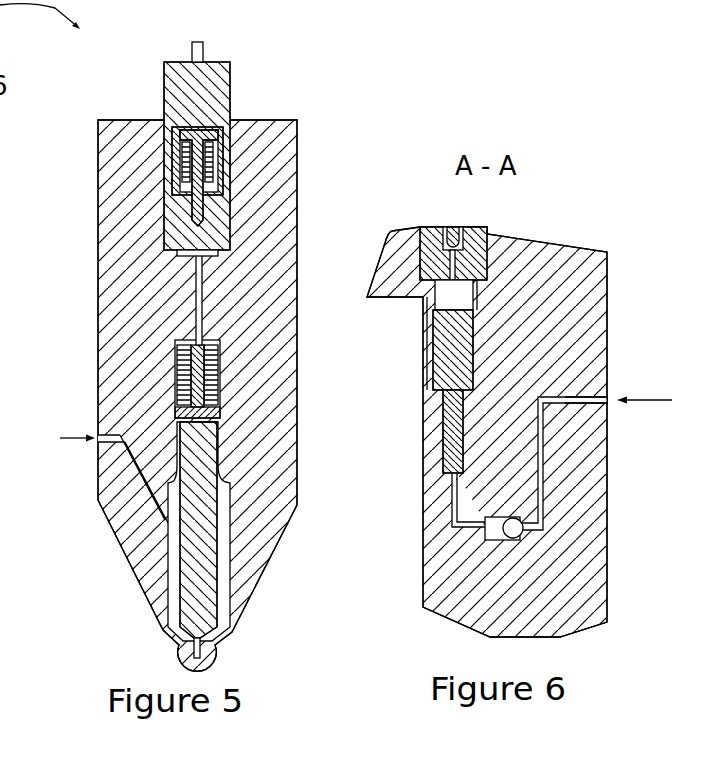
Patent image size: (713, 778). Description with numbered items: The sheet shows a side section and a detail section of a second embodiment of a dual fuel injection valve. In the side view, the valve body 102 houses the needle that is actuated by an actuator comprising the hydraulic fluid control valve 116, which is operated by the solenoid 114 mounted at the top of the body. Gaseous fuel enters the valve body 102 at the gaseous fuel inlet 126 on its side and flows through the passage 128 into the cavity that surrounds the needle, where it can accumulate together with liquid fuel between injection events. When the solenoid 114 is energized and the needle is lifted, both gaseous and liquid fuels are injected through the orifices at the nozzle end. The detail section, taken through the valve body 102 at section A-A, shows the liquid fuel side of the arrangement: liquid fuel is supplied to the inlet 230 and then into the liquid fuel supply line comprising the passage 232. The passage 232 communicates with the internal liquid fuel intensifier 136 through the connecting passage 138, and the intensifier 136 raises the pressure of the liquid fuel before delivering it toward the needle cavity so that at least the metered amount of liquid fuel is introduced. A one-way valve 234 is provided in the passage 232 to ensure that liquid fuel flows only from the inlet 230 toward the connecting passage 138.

In FIG. 5, the valve body 102 is at (263, 140).
In FIG. 6, the valve body 102 is at (543, 273).
In FIG. 5, the solenoid 114 is at (200, 92).
In FIG. 5, the hydraulic fluid control valve 116 is at (220, 128).
In FIG. 5, the gaseous fuel inlet 126 is at (98, 442).
In FIG. 5, the passage 128 is at (150, 503).
In FIG. 6, the liquid fuel intensifier 136 is at (433, 348).
In FIG. 6, the connecting passage 138 is at (437, 528).
In FIG. 6, the inlet 230 is at (610, 402).
In FIG. 6, the passage 232 is at (558, 470).
In FIG. 6, the one-way valve 234 is at (513, 536).